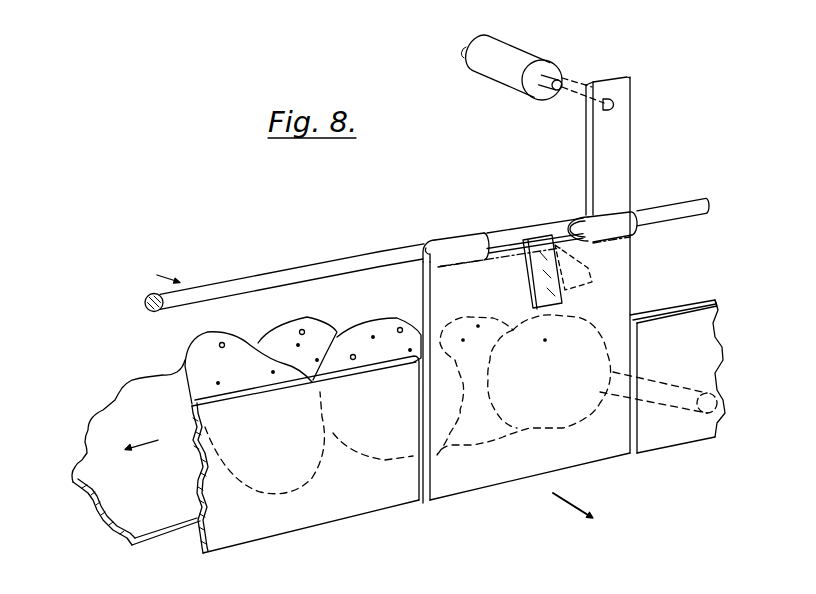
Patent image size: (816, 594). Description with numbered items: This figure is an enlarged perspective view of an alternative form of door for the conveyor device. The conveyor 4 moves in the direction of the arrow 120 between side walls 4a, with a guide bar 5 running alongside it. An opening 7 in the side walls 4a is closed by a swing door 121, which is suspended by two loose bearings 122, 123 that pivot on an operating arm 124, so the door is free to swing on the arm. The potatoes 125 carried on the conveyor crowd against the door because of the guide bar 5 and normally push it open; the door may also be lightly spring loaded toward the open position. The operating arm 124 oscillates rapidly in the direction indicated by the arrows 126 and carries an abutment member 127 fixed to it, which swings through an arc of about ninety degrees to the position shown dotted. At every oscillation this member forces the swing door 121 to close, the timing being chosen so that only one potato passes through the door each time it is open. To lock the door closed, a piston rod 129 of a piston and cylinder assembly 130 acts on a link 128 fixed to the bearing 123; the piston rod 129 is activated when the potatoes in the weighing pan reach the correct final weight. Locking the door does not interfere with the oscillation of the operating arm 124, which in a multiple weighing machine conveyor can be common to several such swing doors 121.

The conveyor 4 is at (170, 517).
The side walls 4a is at (282, 520).
The guide bar 5 is at (667, 400).
The opening 7 is at (428, 503).
The arrow 120 is at (130, 433).
The swing door 121 is at (593, 455).
The loose bearing 122 is at (463, 242).
The loose bearing 123 is at (630, 222).
The operating arm 124 is at (278, 282).
The potatoes 125 is at (375, 330).
The arrows 126 is at (182, 300).
The abutment member 127 is at (533, 290).
The link 128 is at (622, 148).
The piston rod 129 is at (548, 84).
The piston and cylinder assembly 130 is at (503, 73).